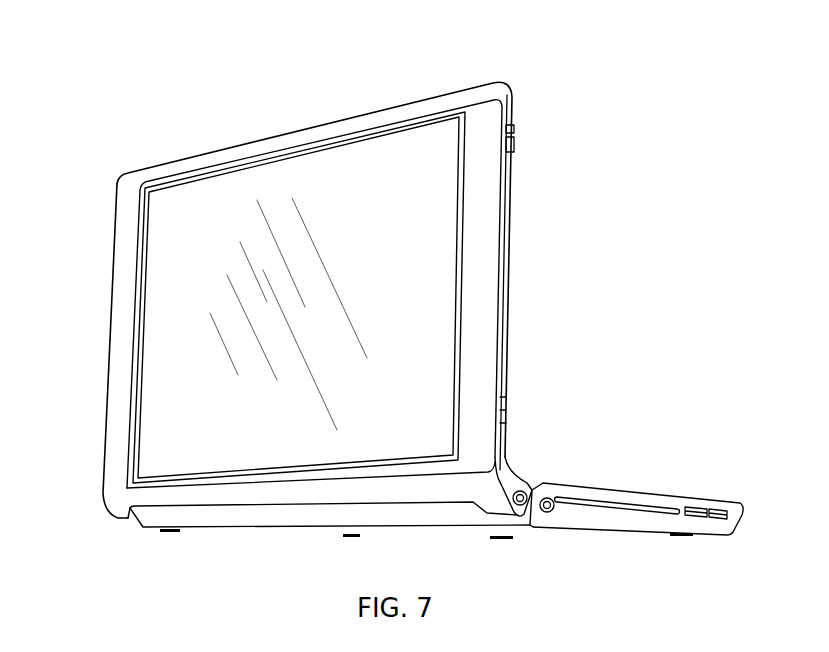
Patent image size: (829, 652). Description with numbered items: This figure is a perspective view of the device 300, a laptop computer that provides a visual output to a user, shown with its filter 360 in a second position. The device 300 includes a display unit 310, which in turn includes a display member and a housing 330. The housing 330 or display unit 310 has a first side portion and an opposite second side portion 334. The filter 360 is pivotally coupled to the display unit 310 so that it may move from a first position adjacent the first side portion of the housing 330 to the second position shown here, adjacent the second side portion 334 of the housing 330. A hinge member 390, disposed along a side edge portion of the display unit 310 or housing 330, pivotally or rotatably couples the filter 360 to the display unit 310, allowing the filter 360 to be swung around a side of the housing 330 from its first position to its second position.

The device 300 is at (181, 90).
The display unit 310 is at (288, 129).
The housing 330 is at (109, 302).
The second side portion 334 is at (114, 407).
The filter 360 is at (408, 162).
The hinge member 390 is at (515, 129).